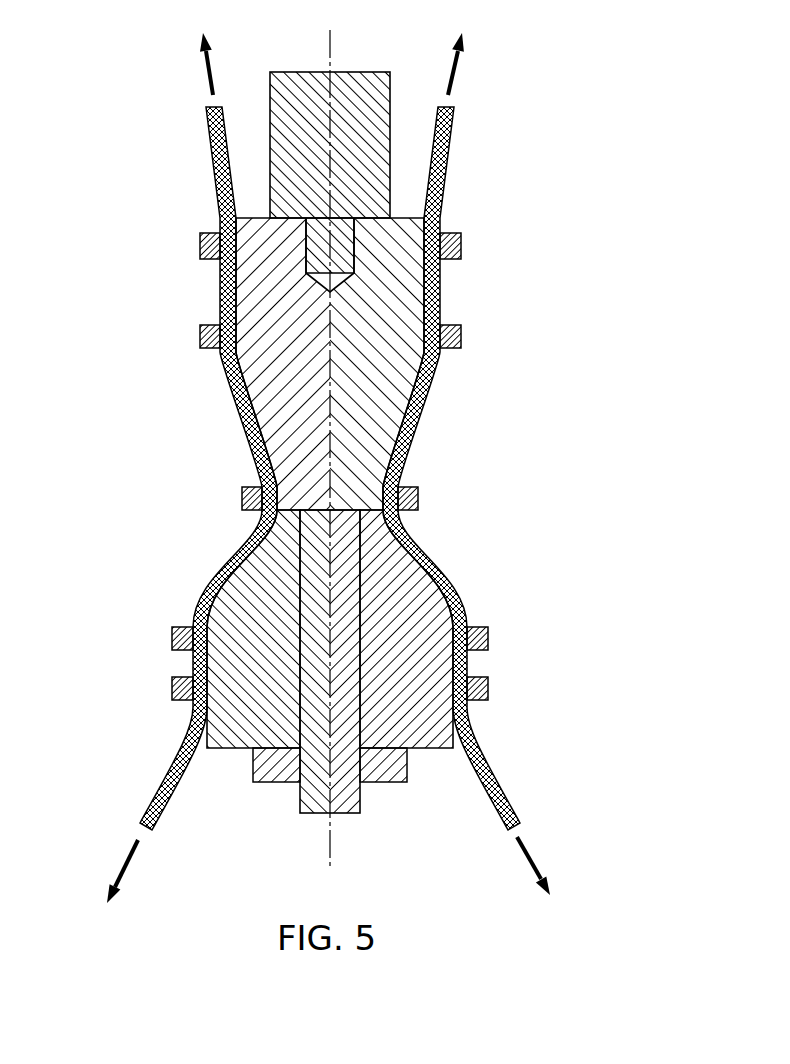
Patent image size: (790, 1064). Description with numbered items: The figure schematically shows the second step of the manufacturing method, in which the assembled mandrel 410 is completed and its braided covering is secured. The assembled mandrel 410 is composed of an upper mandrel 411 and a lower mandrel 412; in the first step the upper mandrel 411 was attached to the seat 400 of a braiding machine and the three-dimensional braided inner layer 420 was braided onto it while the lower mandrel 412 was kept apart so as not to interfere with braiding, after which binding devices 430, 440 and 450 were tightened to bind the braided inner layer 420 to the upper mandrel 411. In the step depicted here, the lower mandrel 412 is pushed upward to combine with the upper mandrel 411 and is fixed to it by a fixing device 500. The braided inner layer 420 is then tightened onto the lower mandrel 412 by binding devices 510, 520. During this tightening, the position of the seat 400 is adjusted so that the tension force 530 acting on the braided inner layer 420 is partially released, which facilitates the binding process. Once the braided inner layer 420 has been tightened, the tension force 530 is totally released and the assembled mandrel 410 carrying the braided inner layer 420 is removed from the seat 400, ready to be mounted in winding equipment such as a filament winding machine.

The seat 400 is at (355, 60).
The assembled mandrel 410 is at (309, 486).
The upper mandrel 411 is at (290, 407).
The lower mandrel 412 is at (227, 743).
The 3D braided inner layer 420 is at (227, 567).
The binding device 430 is at (240, 507).
The binding device 440 is at (197, 340).
The binding device 450 is at (197, 253).
The fixing device 500 is at (273, 781).
The binding device 510 is at (170, 640).
The binding device 520 is at (170, 688).
The tension force 530 is at (345, 472).